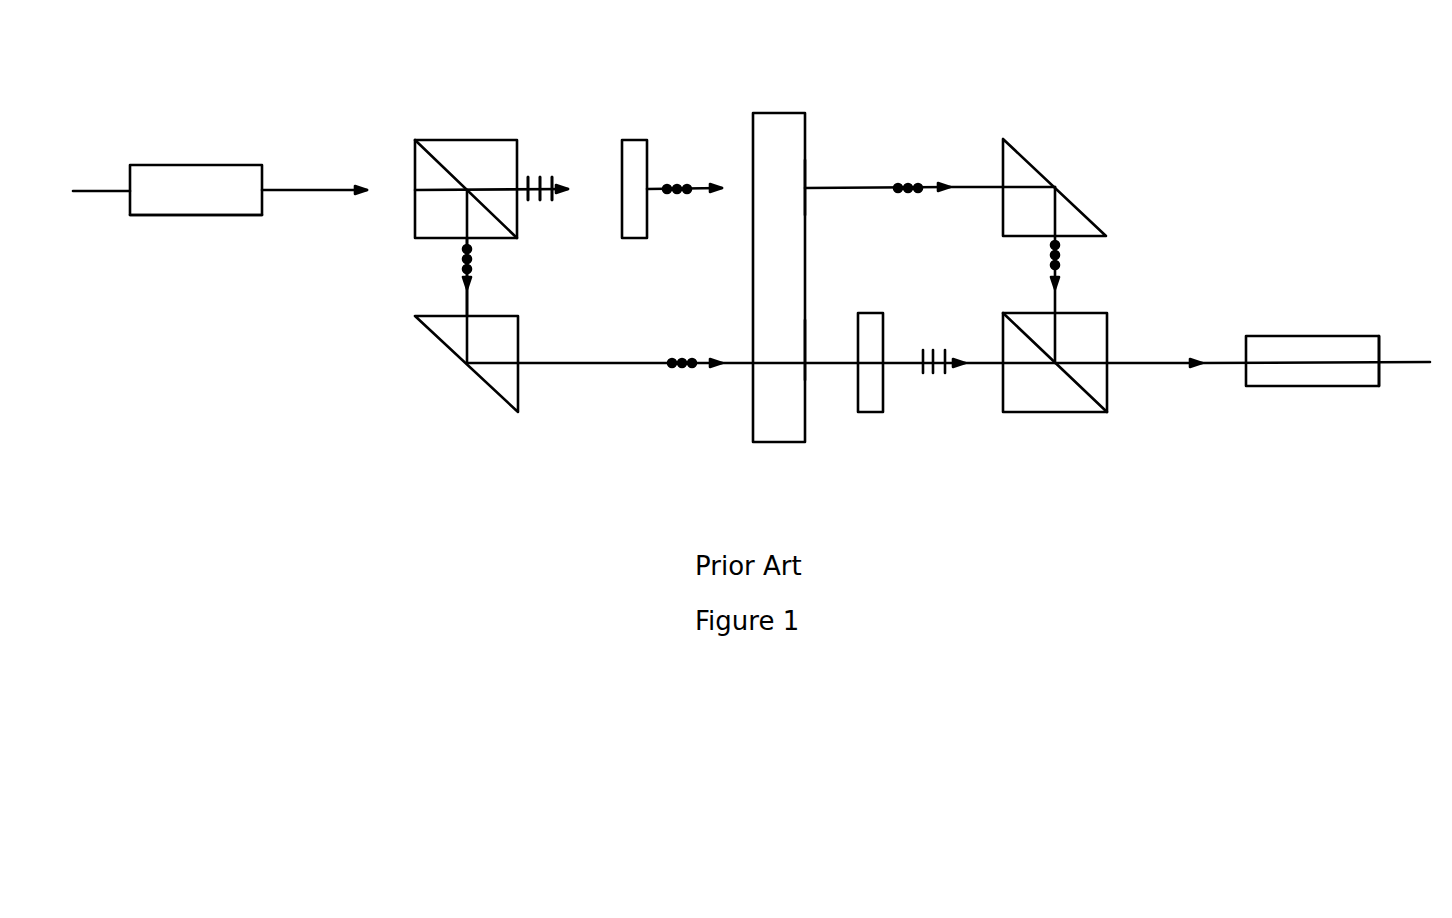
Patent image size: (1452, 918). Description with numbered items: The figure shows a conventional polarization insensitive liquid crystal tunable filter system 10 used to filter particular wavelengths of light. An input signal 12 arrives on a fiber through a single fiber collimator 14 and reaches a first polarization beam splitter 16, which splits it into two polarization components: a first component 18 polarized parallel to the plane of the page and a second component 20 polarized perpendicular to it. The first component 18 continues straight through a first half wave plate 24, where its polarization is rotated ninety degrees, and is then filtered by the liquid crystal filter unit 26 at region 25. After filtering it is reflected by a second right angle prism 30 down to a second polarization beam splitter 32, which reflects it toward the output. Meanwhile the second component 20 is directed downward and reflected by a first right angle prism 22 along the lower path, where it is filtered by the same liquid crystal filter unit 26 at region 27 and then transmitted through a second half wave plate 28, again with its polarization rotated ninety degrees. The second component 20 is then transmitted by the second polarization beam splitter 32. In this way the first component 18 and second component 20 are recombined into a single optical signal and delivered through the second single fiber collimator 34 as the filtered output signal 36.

The polarization insensitive liquid crystal tunable filter system 10 is at (762, 53).
The input signal 12 is at (105, 189).
The single fiber collimator 14 is at (230, 215).
The first polarization beam splitter 16 is at (490, 138).
The first polarization component 18 is at (568, 187).
The second polarization component 20 is at (467, 288).
The first right angle prism 22 is at (518, 412).
The first half wave plate 24 is at (635, 138).
The region 25 is at (818, 172).
The liquid crystal filter unit 26 is at (798, 112).
The region 27 is at (818, 333).
The second half wave plate 28 is at (867, 412).
The second right angle prism 30 is at (1005, 137).
The second polarization beam splitter 32 is at (1068, 413).
The second single fiber collimator 34 is at (1350, 387).
The output signal 36 is at (1400, 358).